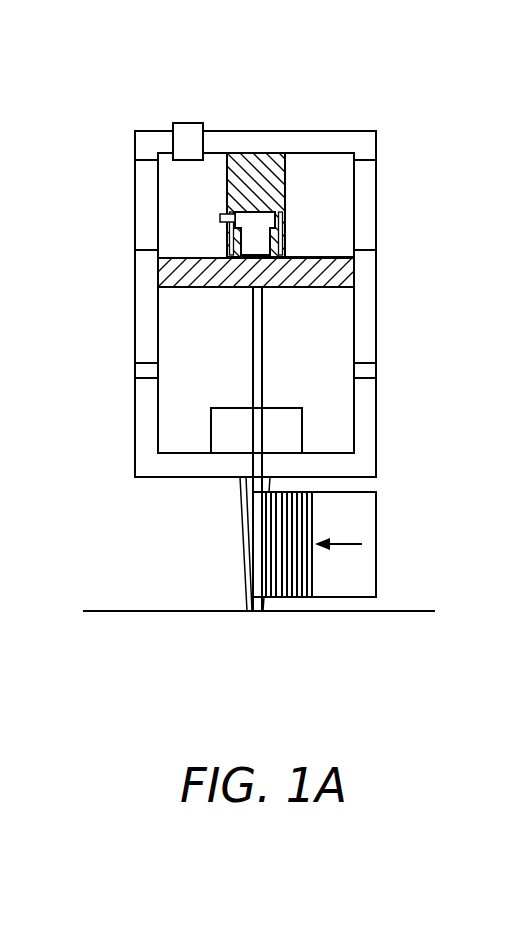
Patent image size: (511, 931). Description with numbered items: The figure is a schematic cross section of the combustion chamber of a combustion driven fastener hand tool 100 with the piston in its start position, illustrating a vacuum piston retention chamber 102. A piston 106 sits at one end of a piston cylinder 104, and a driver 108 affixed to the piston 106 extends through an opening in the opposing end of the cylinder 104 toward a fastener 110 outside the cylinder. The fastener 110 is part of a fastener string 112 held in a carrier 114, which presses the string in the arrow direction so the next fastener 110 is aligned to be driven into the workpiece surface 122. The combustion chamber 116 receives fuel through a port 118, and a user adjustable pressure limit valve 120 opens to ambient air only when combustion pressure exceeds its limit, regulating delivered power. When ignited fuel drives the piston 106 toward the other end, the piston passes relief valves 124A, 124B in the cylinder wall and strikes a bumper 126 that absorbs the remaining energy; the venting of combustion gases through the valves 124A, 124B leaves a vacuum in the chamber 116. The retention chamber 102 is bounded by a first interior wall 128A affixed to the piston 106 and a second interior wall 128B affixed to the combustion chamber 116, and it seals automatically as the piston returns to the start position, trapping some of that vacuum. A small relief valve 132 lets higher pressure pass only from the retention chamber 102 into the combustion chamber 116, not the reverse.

The combustion driven fastener hand tool 100 is at (378, 92).
The vacuum piston retention chamber 102 is at (266, 216).
The piston cylinder 104 is at (323, 138).
The piston 106 is at (163, 273).
The driver 108 is at (257, 360).
The fastener 110 is at (257, 537).
The fastener string 112 is at (283, 563).
The carrier 114 is at (368, 522).
The combustion chamber 116 is at (326, 196).
The port 118 is at (368, 203).
The pressure limit valve 120 is at (190, 132).
The workpiece surface 122 is at (392, 611).
The relief valve 124A is at (368, 370).
The relief valve 124B is at (145, 370).
The bumper 126 is at (233, 437).
The first interior wall 128A is at (245, 250).
The second interior wall 128B is at (240, 212).
The small relief valve 132 is at (220, 218).